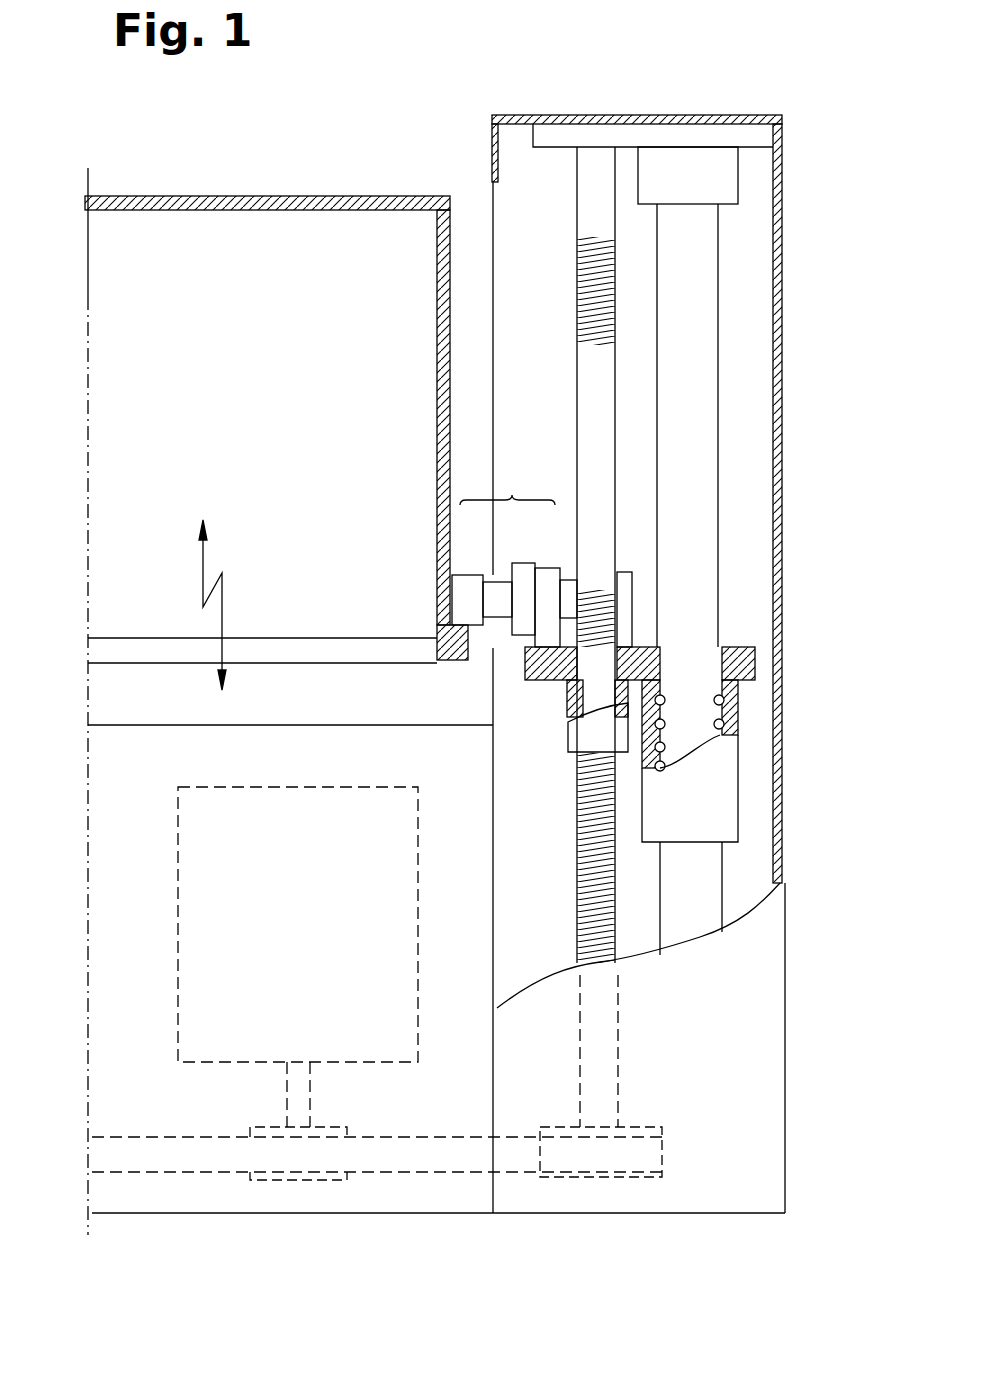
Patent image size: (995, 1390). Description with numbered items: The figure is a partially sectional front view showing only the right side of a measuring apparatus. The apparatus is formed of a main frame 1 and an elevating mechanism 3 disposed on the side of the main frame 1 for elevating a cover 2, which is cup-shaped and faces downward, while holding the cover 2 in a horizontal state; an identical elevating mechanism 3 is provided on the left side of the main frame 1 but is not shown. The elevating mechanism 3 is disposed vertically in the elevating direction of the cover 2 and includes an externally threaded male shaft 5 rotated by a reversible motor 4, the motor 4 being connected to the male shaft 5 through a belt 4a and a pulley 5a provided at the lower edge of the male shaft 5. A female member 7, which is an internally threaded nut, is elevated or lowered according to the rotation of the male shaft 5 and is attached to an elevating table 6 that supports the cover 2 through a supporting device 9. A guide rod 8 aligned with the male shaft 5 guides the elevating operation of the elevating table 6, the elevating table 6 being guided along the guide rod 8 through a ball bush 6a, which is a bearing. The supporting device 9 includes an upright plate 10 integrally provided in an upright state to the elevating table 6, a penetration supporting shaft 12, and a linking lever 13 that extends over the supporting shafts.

The main frame 1 is at (108, 778).
The cover 2 is at (167, 196).
The elevating mechanism 3 is at (742, 106).
The motor 4 is at (178, 900).
The belt 4a is at (417, 1157).
The male shaft 5 is at (605, 338).
The pulley 5a is at (635, 1125).
The elevating table 6 is at (745, 662).
The ball bush 6a is at (717, 792).
The female member 7 is at (617, 715).
The guide rod 8 is at (705, 365).
The supporting device 9 is at (510, 490).
The upright plate 10 is at (545, 640).
The penetration supporting shaft 12 is at (490, 598).
The linking lever 13 is at (522, 570).